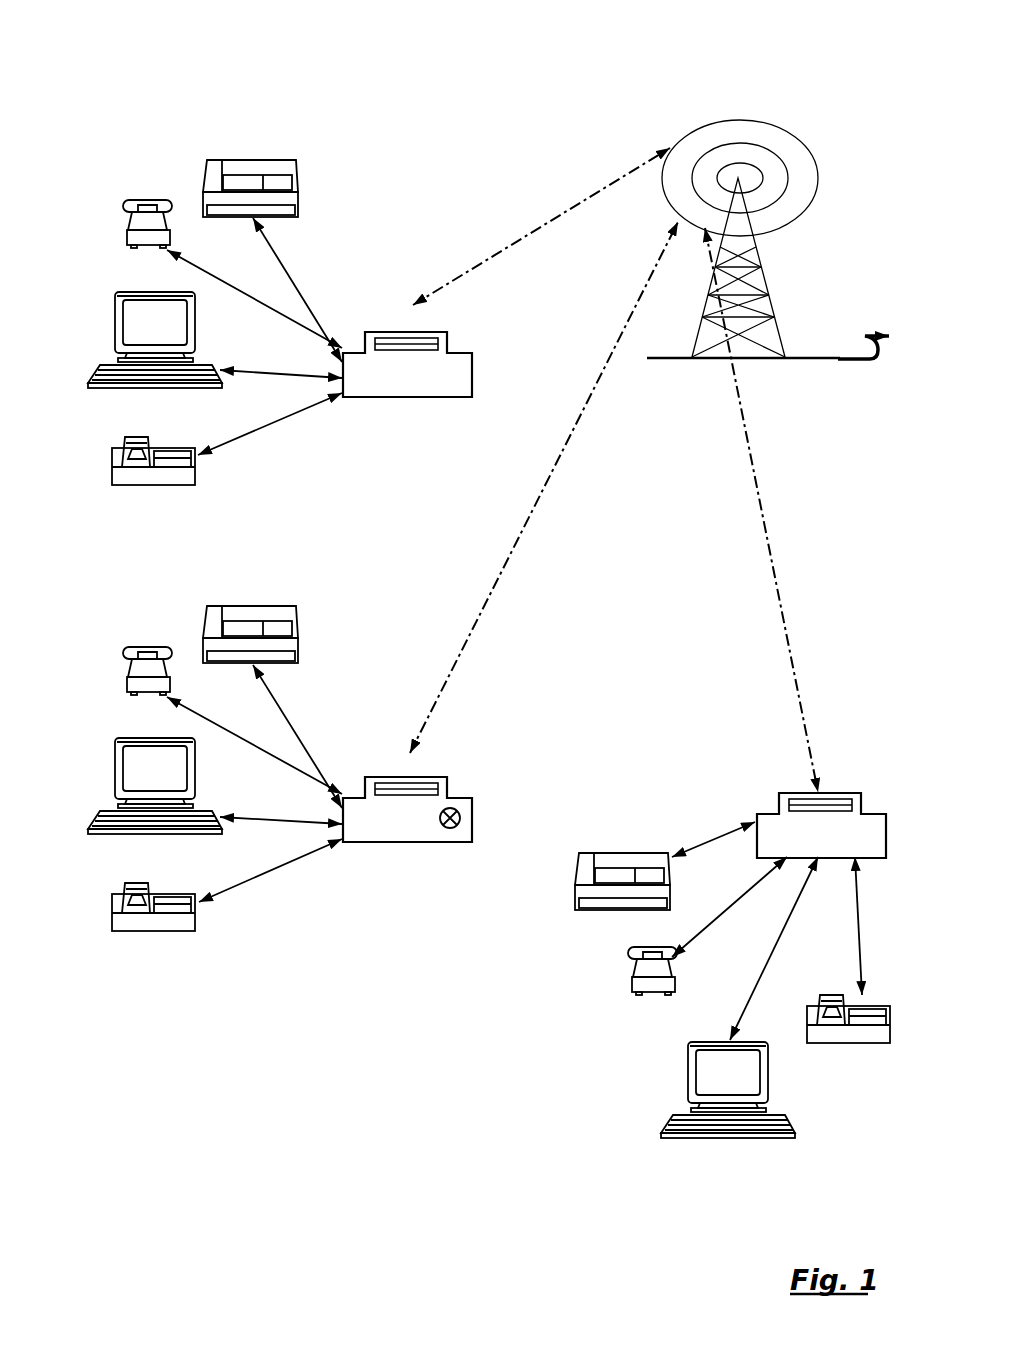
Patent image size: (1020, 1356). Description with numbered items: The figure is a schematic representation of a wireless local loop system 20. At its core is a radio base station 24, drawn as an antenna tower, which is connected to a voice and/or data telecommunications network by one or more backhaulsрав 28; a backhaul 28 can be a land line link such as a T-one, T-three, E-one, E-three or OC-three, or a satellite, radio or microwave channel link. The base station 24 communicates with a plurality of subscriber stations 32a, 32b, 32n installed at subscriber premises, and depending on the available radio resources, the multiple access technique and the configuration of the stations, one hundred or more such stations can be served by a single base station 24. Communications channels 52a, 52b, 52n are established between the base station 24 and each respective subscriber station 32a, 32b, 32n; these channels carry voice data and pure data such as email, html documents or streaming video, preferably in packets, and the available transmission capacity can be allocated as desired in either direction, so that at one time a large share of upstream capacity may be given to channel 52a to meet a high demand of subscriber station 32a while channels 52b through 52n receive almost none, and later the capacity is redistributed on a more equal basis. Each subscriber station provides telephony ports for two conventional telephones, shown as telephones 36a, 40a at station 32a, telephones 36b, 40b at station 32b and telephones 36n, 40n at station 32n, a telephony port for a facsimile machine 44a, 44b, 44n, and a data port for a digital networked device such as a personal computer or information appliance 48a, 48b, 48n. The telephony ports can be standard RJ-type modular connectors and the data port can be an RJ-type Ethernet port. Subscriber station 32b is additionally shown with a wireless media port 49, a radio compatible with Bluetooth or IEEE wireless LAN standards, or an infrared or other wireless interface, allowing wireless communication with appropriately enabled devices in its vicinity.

The wireless local loop system 20 is at (470, 78).
The radio base station 24 is at (740, 238).
The backhaul 28 is at (768, 366).
The subscriber station 32a is at (407, 364).
The subscriber station 32b is at (407, 809).
The subscriber station 32n is at (821, 825).
The conventional telephone 36a is at (125, 461).
The conventional telephone 36b is at (125, 907).
The conventional telephone 36n is at (854, 1036).
The conventional telephone 40a is at (113, 224).
The conventional telephone 40b is at (113, 671).
The conventional telephone 40n is at (646, 992).
The facsimile machine 44a is at (282, 188).
The facsimile machine 44b is at (282, 634).
The facsimile machine 44n is at (622, 858).
The personal computer or information appliance 48a is at (138, 340).
The personal computer or information appliance 48b is at (138, 786).
The personal computer or information appliance 48n is at (728, 1110).
The wireless media port 49 is at (450, 838).
The communications channel 52a is at (541, 226).
The communications channel 52b is at (544, 487).
The communications channel 52n is at (766, 510).